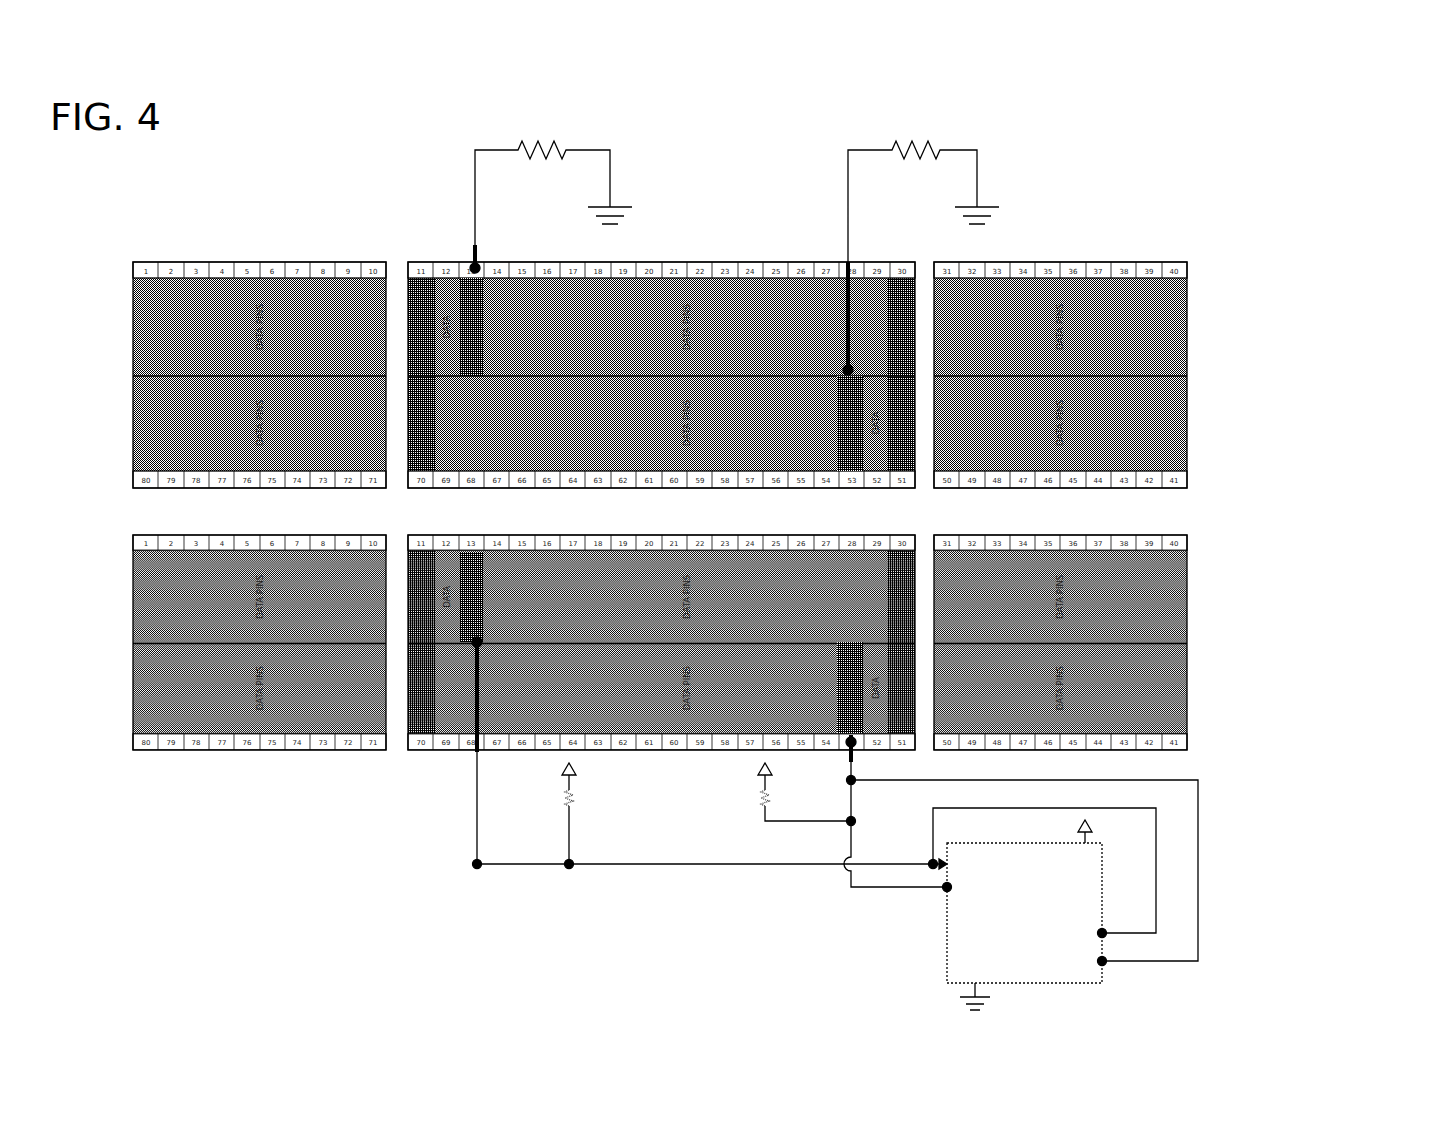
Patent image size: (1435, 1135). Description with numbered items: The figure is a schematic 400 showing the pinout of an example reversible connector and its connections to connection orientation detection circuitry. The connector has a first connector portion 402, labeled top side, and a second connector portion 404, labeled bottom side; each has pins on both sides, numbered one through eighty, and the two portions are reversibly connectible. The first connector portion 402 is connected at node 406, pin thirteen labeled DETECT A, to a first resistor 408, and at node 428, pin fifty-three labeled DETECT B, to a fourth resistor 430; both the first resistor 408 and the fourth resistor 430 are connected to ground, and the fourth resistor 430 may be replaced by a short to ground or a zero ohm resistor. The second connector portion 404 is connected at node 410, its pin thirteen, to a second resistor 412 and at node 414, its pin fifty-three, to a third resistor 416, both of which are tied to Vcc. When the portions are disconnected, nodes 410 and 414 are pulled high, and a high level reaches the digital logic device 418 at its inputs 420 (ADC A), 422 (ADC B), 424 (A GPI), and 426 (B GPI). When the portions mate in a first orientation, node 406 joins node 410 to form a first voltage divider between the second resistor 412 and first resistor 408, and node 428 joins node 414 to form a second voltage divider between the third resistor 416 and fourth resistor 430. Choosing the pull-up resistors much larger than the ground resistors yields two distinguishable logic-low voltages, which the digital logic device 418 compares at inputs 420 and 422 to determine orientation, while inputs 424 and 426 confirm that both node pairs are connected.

The schematic 400 is at (1136, 184).
The first connector portion 402 is at (1347, 263).
The second connector portion 404 is at (1347, 527).
The node 406 is at (471, 267).
The first resistor 408 is at (560, 140).
The node 410 is at (472, 647).
The second resistor 412 is at (583, 795).
The node 414 is at (857, 745).
The third resistor 416 is at (750, 805).
The digital logic device 418 is at (1024, 915).
The input 420 is at (935, 868).
The input 422 is at (945, 888).
The input 424 is at (1105, 928).
The input 426 is at (1105, 963).
The node 428 is at (846, 366).
The fourth resistor 430 is at (930, 140).